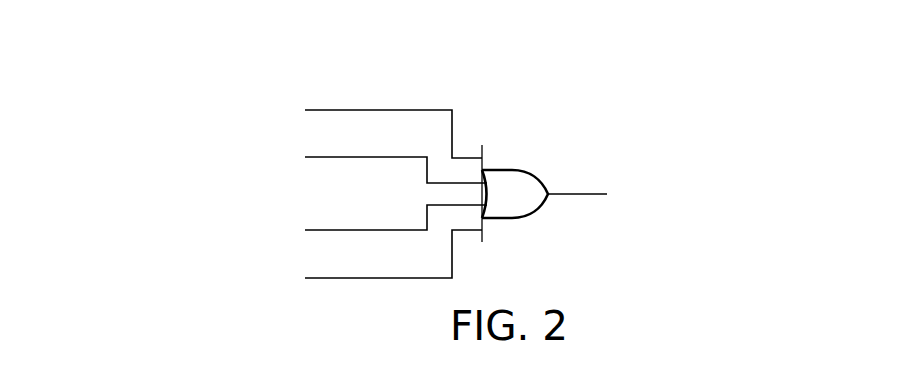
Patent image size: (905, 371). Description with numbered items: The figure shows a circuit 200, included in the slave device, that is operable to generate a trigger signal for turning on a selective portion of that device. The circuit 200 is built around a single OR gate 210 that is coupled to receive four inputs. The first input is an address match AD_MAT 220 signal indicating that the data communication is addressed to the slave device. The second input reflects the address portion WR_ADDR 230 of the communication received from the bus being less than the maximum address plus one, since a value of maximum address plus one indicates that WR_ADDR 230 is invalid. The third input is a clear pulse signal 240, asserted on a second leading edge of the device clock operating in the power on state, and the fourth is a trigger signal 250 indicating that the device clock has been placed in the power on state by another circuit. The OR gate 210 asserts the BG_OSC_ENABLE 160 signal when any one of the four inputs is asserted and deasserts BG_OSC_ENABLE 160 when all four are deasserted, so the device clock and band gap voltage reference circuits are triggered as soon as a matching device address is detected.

The circuit 200 is at (673, 80).
The OR gate 210 is at (523, 170).
The address match AD_MAT signal 220 is at (378, 158).
The address portion WR_ADDR 230 is at (353, 110).
The clear pulse signal 240 is at (343, 230).
The trigger signal 250 is at (355, 282).
The BG_OSC_ENABLE signal 160 is at (580, 197).